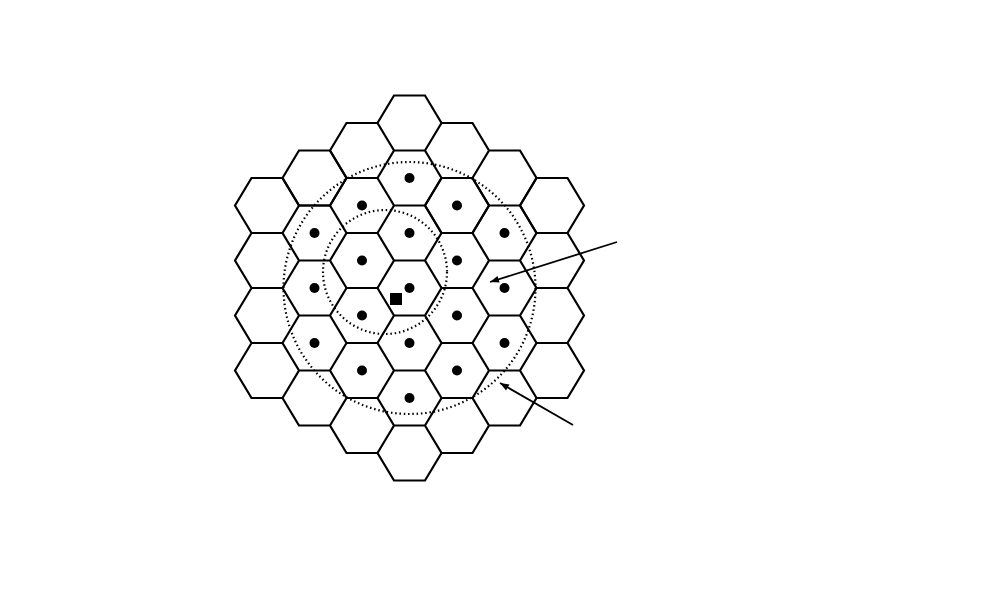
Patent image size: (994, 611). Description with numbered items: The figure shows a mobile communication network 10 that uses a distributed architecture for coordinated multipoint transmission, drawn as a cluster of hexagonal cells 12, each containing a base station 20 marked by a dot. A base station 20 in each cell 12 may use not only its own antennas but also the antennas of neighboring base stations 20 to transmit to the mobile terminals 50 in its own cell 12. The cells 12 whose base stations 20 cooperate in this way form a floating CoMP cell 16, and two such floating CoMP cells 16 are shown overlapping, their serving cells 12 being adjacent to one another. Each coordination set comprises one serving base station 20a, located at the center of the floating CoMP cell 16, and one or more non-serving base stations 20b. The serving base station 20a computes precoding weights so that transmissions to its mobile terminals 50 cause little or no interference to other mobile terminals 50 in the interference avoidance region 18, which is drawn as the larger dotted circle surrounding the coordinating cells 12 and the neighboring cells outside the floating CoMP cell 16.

The mobile communication network 10 is at (610, 90).
The cell 12 is at (555, 178).
The floating CoMP cell 16 is at (313, 192).
The interference avoidance region 18 is at (535, 308).
The base station 20 is at (458, 372).
The serving base station 20a is at (360, 261).
The non-serving base station 20b is at (362, 205).
The mobile terminal 50 is at (392, 307).